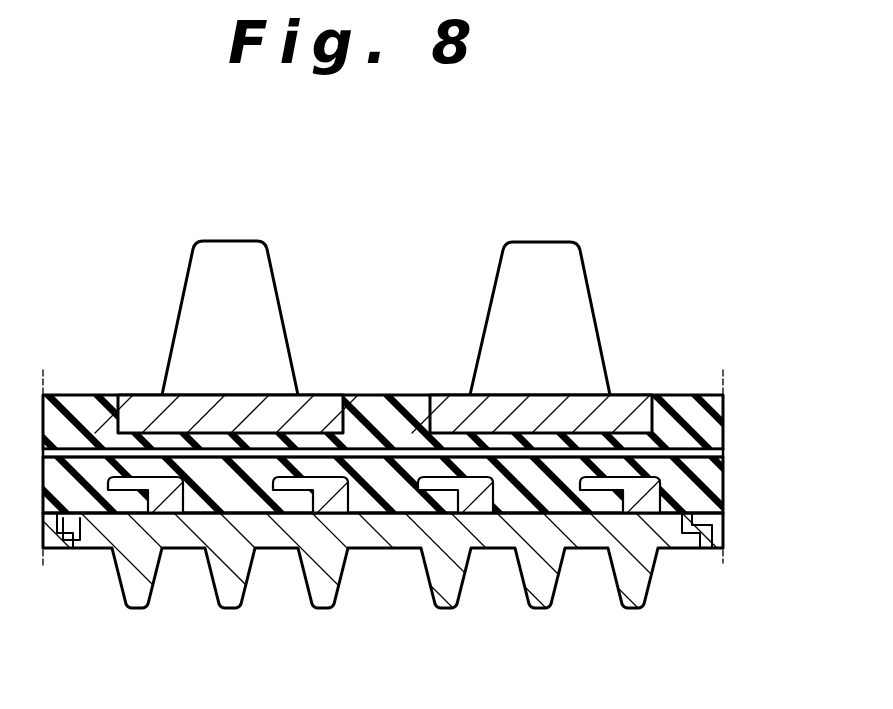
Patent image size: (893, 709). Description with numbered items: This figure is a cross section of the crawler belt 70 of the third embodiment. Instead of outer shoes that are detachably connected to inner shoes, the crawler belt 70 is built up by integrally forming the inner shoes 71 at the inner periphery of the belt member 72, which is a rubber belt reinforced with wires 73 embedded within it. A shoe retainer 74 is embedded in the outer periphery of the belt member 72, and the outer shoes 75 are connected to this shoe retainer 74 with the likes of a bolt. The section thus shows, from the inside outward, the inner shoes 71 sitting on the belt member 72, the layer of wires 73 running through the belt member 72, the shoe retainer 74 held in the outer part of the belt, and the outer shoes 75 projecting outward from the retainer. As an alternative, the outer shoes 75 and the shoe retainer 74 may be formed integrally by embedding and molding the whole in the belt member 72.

The crawler belt 70 is at (672, 263).
The inner shoes 71 is at (628, 395).
The belt member 72 is at (705, 395).
The wires 73 is at (724, 453).
The shoe retainer 74 is at (688, 490).
The outer shoes 75 is at (635, 592).